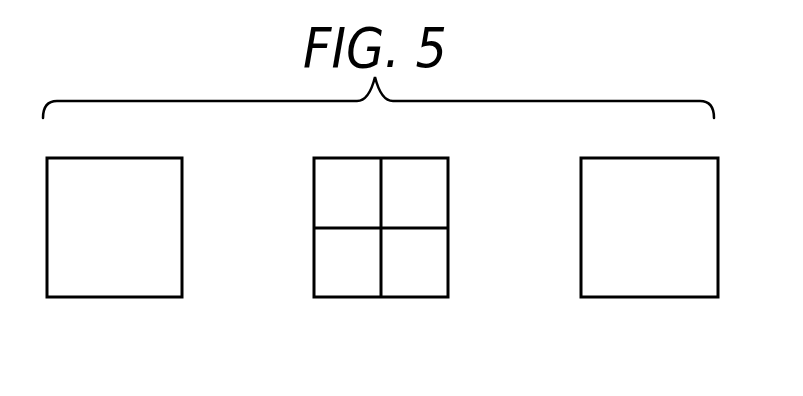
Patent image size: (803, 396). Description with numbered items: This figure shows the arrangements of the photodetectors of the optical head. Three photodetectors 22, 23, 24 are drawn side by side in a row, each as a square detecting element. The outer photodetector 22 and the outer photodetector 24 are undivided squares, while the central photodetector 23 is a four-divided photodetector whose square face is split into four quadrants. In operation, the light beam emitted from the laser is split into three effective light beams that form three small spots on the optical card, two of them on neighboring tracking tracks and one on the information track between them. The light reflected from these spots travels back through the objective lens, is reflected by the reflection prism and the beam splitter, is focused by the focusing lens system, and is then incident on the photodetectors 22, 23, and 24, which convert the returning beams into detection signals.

The photodetector 22 is at (122, 283).
The photodetector 23 is at (388, 299).
The photodetector 24 is at (657, 283).